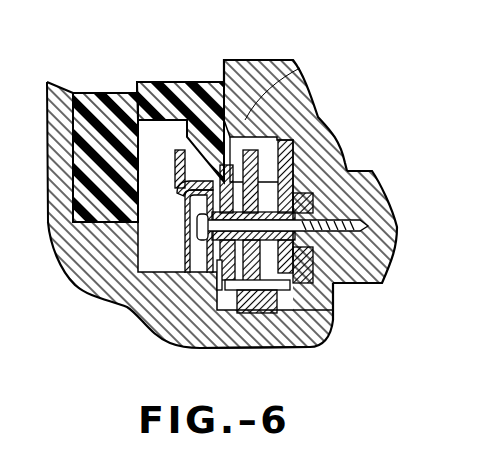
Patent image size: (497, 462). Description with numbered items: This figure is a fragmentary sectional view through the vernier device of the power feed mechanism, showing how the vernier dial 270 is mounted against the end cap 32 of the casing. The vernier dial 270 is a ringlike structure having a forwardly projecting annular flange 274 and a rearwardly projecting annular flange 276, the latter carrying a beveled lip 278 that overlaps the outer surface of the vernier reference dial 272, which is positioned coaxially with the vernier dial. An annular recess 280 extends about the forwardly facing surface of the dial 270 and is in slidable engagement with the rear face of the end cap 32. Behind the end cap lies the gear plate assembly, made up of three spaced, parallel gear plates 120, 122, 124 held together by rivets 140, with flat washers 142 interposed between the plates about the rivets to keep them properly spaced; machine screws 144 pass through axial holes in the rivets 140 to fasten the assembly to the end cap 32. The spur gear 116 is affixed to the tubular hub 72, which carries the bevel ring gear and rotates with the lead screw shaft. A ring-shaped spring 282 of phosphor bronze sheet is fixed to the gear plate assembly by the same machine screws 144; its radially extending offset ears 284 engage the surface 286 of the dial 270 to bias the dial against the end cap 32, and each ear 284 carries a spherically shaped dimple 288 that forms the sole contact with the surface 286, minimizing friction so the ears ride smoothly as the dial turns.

The vernier reference dial 272 is at (82, 93).
The beveled lip 278 is at (122, 87).
The rearwardly projecting annular flange 276 is at (165, 84).
The vernier dial 270 is at (203, 82).
The annular recess 280 is at (245, 183).
The forwardly projecting annular flange 274 is at (255, 180).
The flat washers 142 is at (243, 147).
The rivets 140 is at (310, 207).
The end cap 32 is at (375, 202).
The surface of the vernier dial 286 is at (182, 135).
The spherically shaped dimple 288 is at (186, 166).
The offset ears 284 is at (192, 200).
The machine screws 144 is at (200, 224).
The ring-shaped spring 282 is at (208, 262).
The hub 72 is at (162, 307).
The gear plate 124 is at (217, 347).
The gear plate 122 is at (258, 272).
The spur gear 116 is at (262, 290).
The gear plate 120 is at (293, 300).